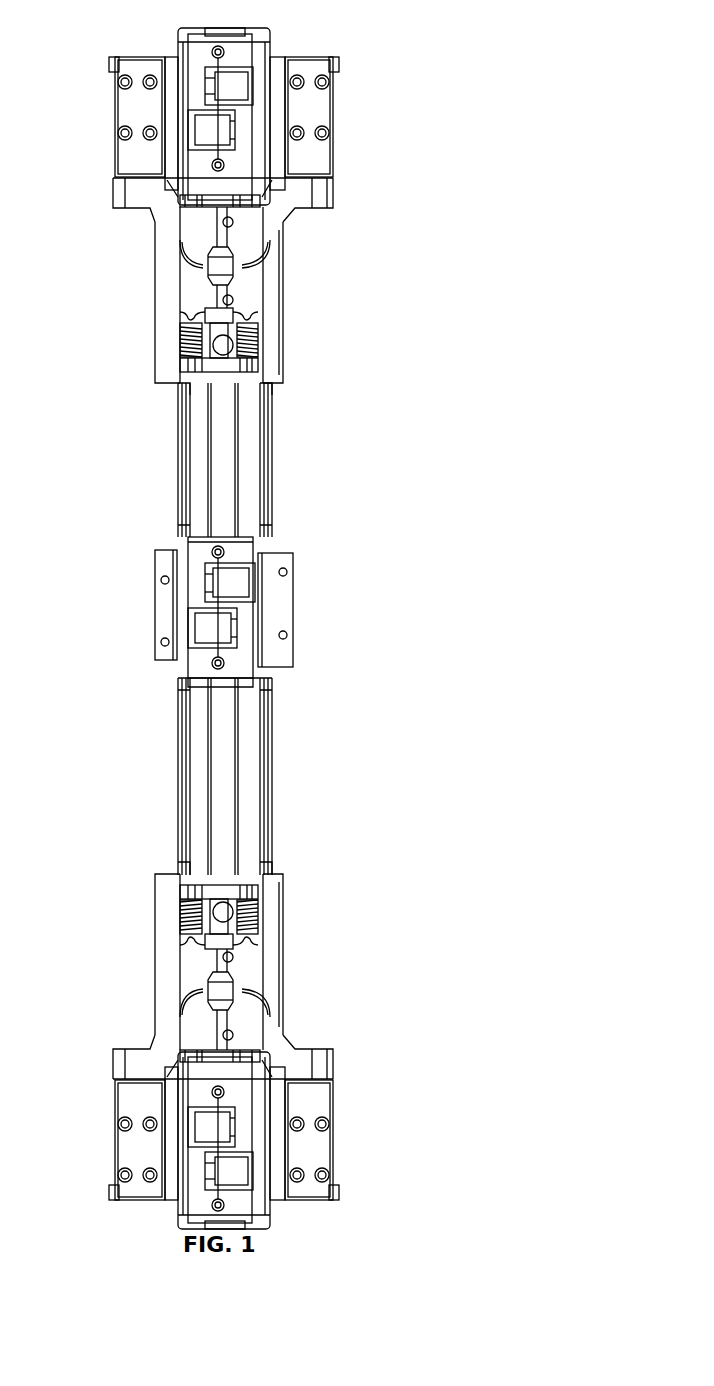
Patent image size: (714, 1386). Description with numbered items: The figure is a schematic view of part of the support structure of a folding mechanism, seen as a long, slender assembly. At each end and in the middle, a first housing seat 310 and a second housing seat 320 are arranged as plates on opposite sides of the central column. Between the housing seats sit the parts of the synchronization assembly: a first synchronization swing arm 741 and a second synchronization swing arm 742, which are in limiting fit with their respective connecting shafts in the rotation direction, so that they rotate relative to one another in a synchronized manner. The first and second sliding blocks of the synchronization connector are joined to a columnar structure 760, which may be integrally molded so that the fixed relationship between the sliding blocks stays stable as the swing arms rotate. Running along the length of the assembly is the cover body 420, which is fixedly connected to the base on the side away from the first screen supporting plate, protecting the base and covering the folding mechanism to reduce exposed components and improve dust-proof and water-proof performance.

The first housing seat 310 is at (140, 112).
The second housing seat 320 is at (308, 110).
The first synchronization swing arm 741 is at (168, 296).
The second synchronization swing arm 742 is at (273, 345).
The columnar structure 760 is at (222, 268).
The cover body 420 is at (223, 505).